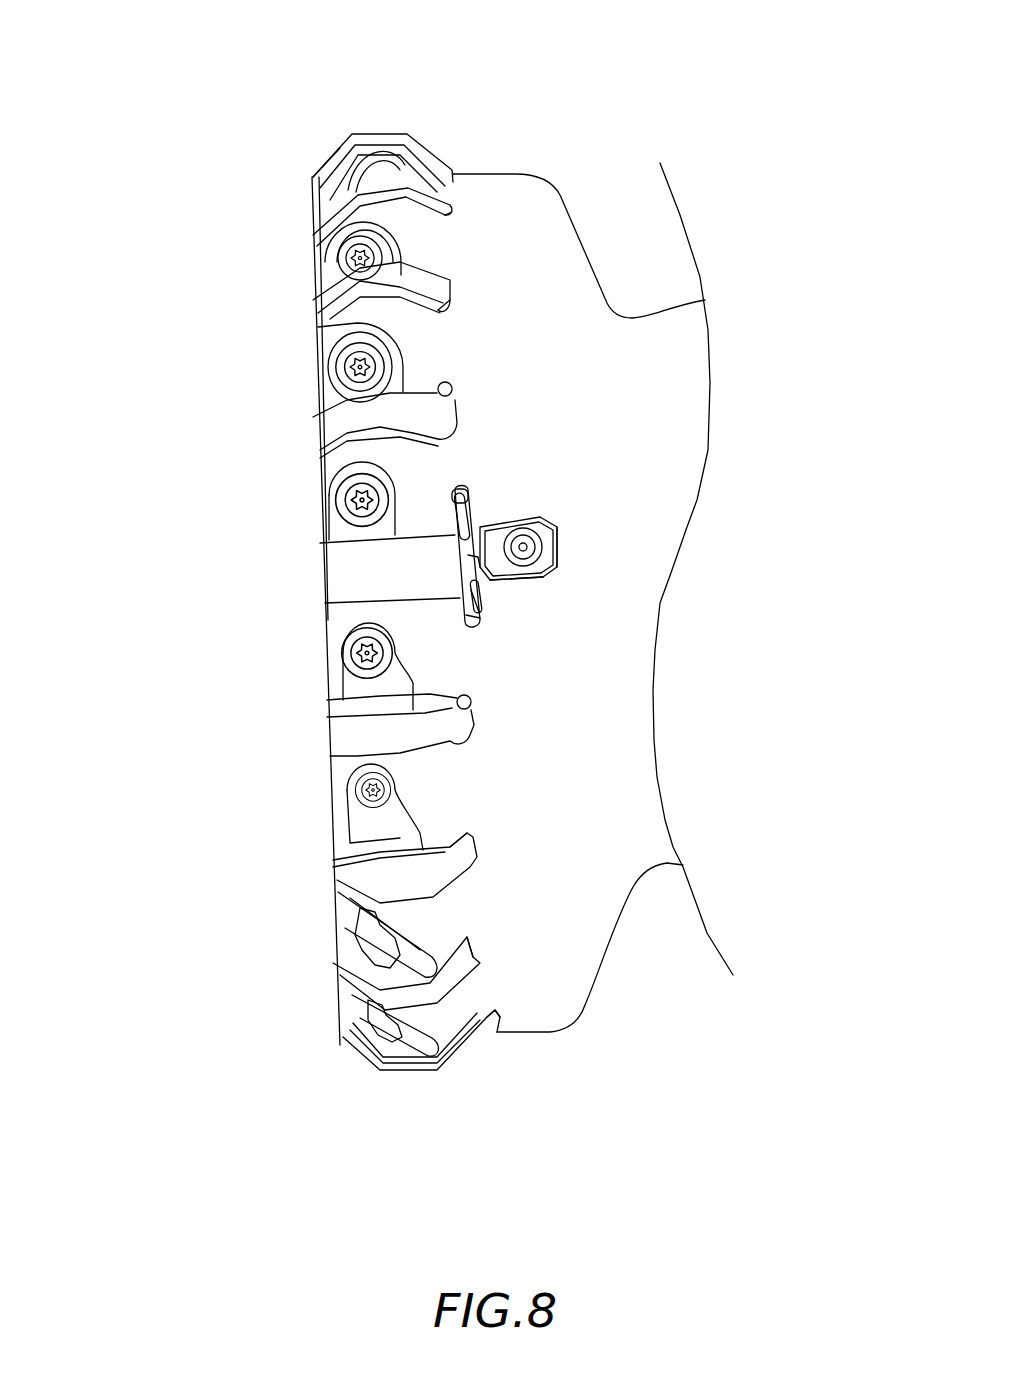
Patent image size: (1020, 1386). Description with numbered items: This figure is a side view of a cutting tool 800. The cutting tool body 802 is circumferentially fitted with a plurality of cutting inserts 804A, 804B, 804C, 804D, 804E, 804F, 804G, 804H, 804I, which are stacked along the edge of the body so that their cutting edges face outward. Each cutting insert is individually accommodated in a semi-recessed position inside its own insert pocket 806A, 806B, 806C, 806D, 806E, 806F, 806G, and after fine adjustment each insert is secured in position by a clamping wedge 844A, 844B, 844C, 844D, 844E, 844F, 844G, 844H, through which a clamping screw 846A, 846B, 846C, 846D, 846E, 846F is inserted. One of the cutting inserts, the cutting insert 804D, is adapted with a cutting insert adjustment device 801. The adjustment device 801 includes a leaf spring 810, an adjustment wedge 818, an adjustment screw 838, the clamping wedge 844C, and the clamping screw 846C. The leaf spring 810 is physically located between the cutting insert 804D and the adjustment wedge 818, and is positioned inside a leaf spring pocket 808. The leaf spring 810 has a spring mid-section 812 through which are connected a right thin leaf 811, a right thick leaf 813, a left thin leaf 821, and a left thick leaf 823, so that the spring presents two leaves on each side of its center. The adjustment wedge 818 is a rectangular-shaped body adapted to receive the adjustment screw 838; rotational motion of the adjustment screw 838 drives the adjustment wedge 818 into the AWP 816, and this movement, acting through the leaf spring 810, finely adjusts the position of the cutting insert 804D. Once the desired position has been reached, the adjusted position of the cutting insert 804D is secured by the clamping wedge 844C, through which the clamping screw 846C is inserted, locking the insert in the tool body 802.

The cutting tool 800 is at (262, 88).
The cutting insert adjustment device 801 is at (258, 596).
The cutting tool body 802 is at (648, 668).
The cutting insert 804A is at (315, 213).
The cutting insert 804B is at (320, 304).
The cutting insert 804C is at (328, 432).
The cutting insert 804D is at (322, 578).
The cutting insert 804E is at (340, 735).
The cutting insert 804F is at (343, 866).
The cutting insert 804G is at (345, 968).
The cutting insert 804H is at (347, 1038).
The cutting insert 804I is at (313, 178).
The insert pocket 806A is at (452, 220).
The insert pocket 806B is at (455, 305).
The insert pocket 806C is at (450, 390).
The insert pocket 806D is at (472, 695).
The insert pocket 806E is at (457, 846).
The insert pocket 806F is at (478, 933).
The insert pocket 806G is at (487, 1014).
The leaf spring pocket 808 is at (460, 565).
The leaf spring 810 is at (436, 567).
The right thin leaf 811 is at (497, 615).
The spring mid-section 812 is at (462, 588).
The right thick leaf 813 is at (495, 594).
The AWP 816 is at (563, 565).
The adjustment wedge 818 is at (555, 545).
The left thin leaf 821 is at (477, 516).
The left thick leaf 823 is at (480, 500).
The adjustment screw 838 is at (540, 538).
The clamping wedge 844A is at (322, 260).
The clamping wedge 844B is at (325, 372).
The clamping wedge 844C is at (330, 512).
The clamping wedge 844D is at (335, 655).
The clamping wedge 844E is at (343, 800).
The clamping wedge 844F is at (365, 921).
The clamping wedge 844G is at (368, 1013).
The clamping wedge 844H is at (348, 163).
The clamping screw 846A is at (385, 252).
The clamping screw 846B is at (385, 360).
The clamping screw 846C is at (383, 494).
The clamping screw 846D is at (385, 652).
The clamping screw 846E is at (385, 790).
The clamping screw 846F is at (378, 168).